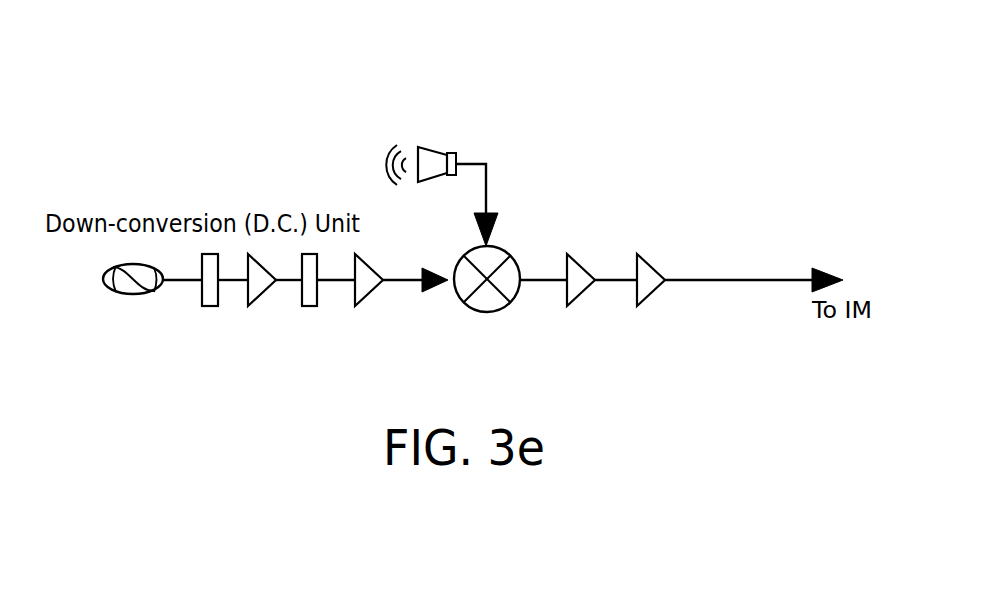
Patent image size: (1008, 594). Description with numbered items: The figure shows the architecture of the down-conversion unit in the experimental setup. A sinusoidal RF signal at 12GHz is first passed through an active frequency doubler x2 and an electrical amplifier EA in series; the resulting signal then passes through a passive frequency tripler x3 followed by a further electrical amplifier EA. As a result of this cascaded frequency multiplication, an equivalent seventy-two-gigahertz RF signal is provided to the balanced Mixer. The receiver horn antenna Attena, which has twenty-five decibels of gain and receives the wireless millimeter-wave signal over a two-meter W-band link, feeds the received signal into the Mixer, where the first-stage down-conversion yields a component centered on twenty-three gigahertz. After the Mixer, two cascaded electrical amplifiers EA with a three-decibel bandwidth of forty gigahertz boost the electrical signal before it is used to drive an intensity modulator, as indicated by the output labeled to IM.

The 12-GHz sinusoidal RF signal 12GHz is at (133, 318).
The active frequency doubler x2 is at (208, 296).
The passive frequency tripler x3 is at (306, 295).
The electrical amplifier EA is at (454, 297).
The balanced mixer Mixer is at (487, 312).
The horn antenna Attena is at (474, 195).